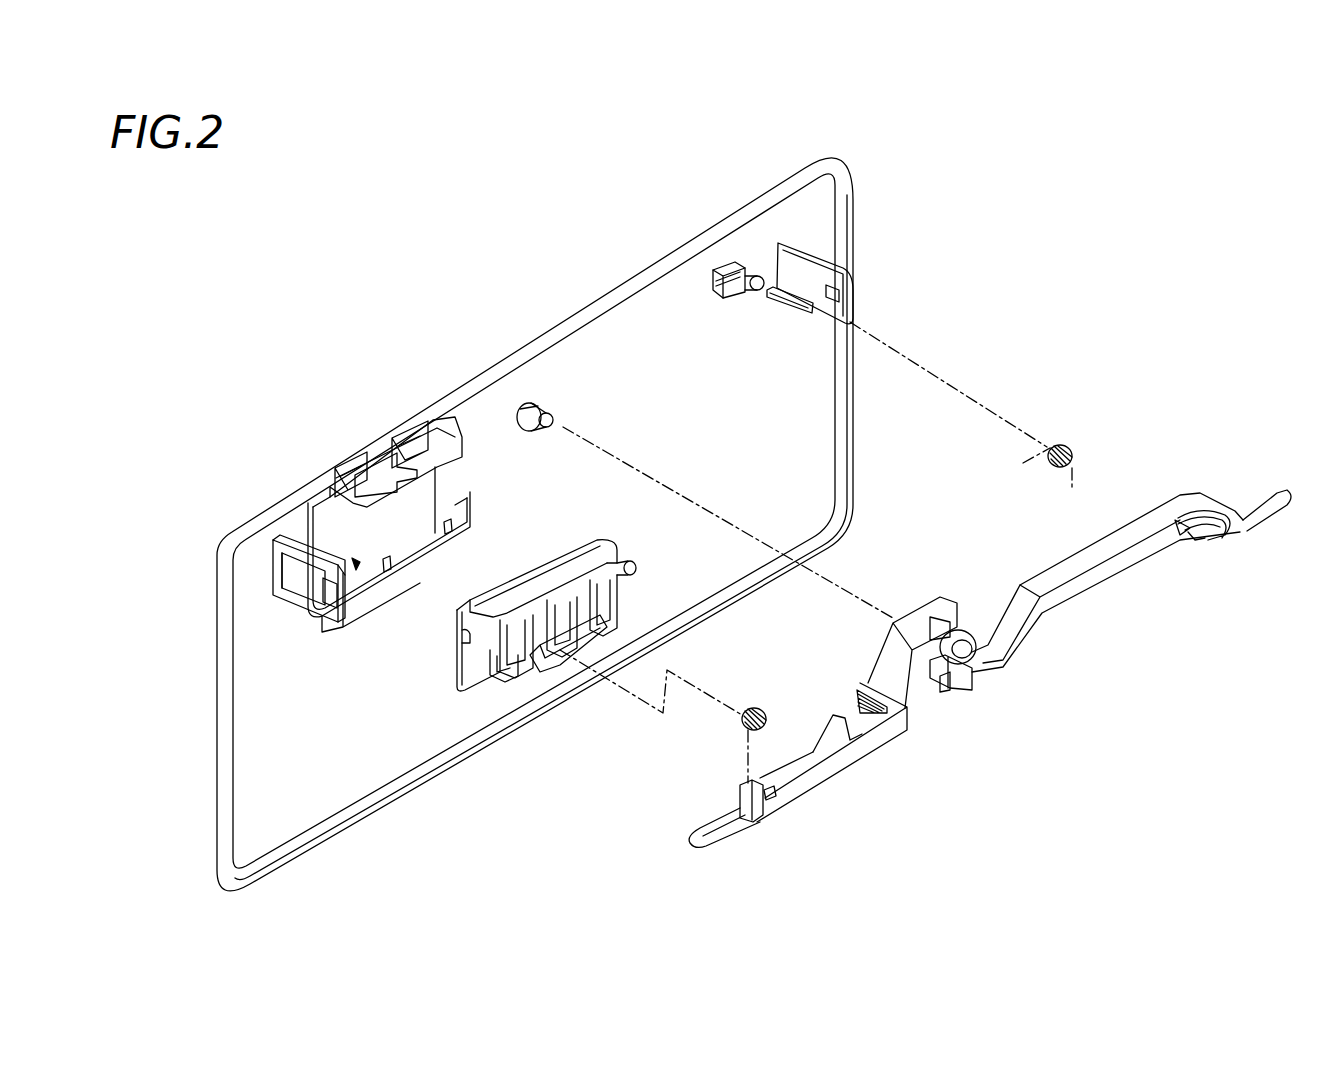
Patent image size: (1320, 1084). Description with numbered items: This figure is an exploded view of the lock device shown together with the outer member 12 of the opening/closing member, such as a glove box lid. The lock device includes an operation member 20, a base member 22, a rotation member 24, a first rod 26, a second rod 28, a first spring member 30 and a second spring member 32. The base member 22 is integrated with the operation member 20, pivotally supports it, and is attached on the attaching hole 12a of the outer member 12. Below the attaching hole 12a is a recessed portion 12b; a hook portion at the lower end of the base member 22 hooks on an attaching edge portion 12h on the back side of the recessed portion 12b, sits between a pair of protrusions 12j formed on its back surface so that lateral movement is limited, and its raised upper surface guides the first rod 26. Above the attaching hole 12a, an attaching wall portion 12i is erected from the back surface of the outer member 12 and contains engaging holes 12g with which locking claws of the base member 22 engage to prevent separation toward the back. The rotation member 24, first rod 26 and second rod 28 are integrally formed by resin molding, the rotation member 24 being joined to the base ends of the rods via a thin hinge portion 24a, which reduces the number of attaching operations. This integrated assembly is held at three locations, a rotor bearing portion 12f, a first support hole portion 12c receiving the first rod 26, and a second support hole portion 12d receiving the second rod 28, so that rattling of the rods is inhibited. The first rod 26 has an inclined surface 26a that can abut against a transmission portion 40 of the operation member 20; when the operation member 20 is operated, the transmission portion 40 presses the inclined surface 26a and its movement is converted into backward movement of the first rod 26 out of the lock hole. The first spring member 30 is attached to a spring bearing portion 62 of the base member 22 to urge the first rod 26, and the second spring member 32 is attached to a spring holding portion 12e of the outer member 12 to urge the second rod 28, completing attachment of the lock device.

The outer member 12 is at (807, 210).
The attaching hole 12a is at (338, 592).
The recessed portion 12b is at (399, 511).
The first support hole portion 12c is at (291, 556).
The second support hole portion 12d is at (840, 288).
The spring holding portion 12e is at (742, 268).
The rotor bearing portion 12f is at (532, 403).
The engaging holes 12g is at (365, 450).
The attaching edge portion 12h is at (507, 577).
The attaching wall portion 12i is at (388, 452).
The protrusions 12j is at (452, 525).
The operation member 20 is at (563, 665).
The base member 22 is at (573, 650).
The rotation member 24 is at (948, 645).
The thin hinge portion 24a is at (935, 625).
The first rod 26 is at (823, 722).
The inclined surface 26a is at (830, 737).
The second rod 28 is at (1113, 570).
The first spring member 30 is at (750, 707).
The second spring member 32 is at (1066, 448).
The transmission portion 40 is at (612, 615).
The spring bearing portion 62 is at (497, 665).